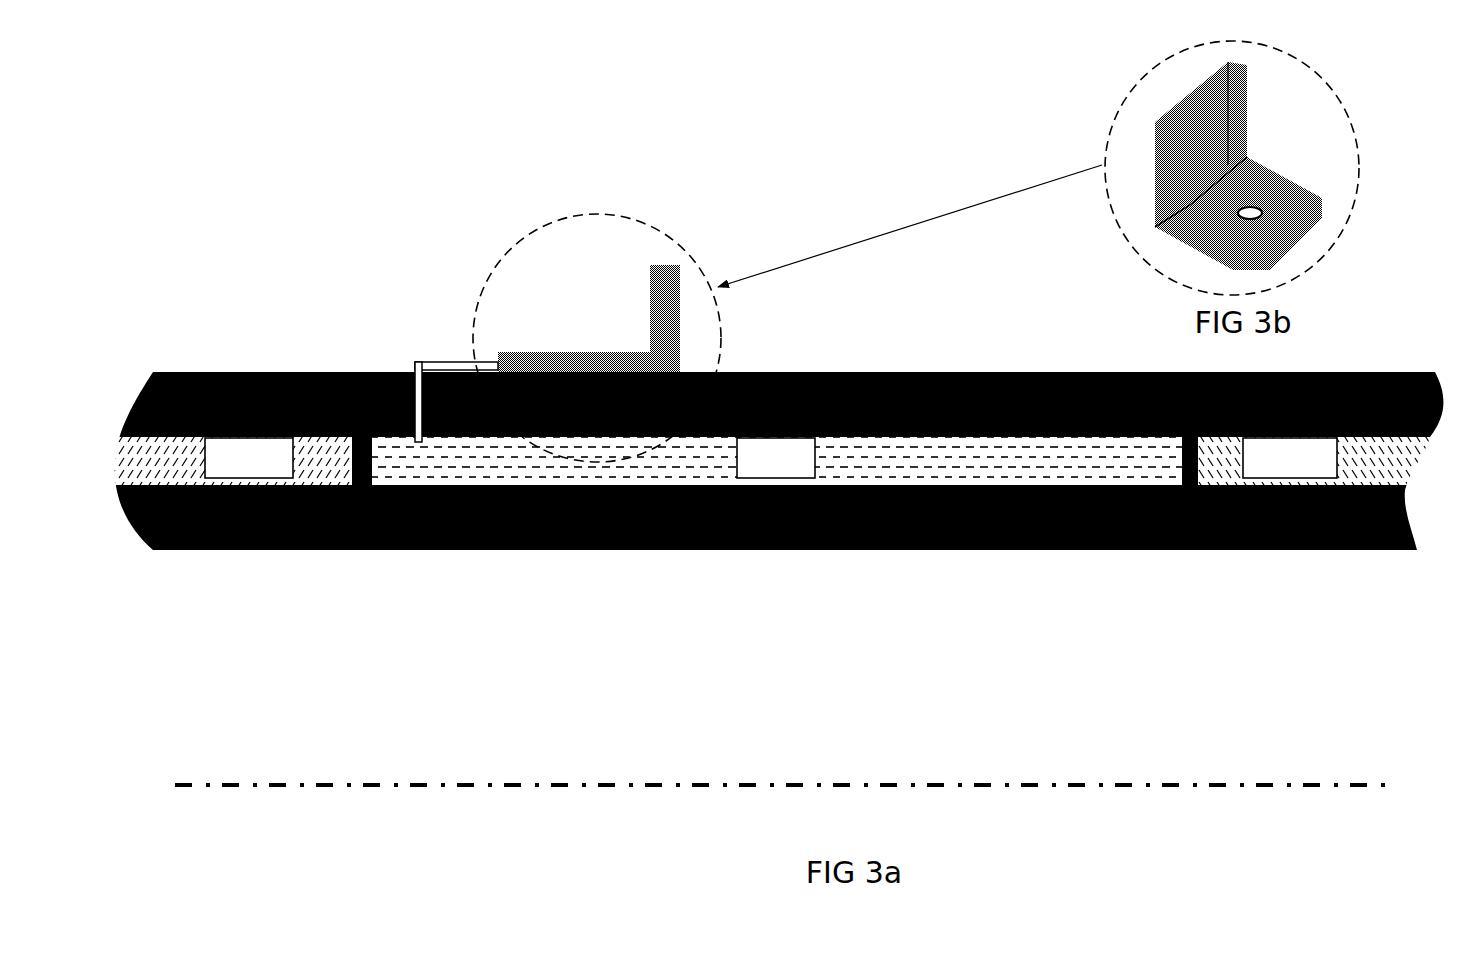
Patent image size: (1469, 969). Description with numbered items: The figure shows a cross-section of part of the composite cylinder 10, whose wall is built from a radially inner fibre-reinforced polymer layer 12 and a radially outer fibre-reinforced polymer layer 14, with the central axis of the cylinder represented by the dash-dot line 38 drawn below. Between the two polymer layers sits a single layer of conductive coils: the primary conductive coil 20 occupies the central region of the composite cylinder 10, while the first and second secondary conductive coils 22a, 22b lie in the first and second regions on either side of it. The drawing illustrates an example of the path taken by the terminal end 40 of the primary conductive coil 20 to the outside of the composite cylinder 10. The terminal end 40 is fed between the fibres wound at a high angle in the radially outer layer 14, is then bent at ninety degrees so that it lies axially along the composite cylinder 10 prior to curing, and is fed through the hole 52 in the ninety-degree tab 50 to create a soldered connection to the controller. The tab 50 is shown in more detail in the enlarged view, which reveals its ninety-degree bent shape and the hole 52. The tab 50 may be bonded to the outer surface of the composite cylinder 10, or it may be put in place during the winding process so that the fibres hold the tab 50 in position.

In FIG. 3A, the composite cylinder 10 is at (232, 137).
In FIG. 3A, the radially inner fibre-reinforced polymer layer 12 is at (438, 548).
In FIG. 3A, the radially outer fibre-reinforced polymer layer 14 is at (303, 370).
In FIG. 3A, the primary conductive coil 20 is at (785, 461).
In FIG. 3A, the first secondary conductive coil 22a is at (236, 461).
In FIG. 3A, the second secondary conductive coil 22b is at (1329, 461).
In FIG. 3A, the central axis 38 is at (1107, 778).
In FIG. 3A, the terminal end 40 is at (433, 360).
In FIG. 3A, the tab 50 is at (555, 352).
In FIG. 3B, the tab 50 is at (1250, 107).
In FIG. 3B, the hole 52 is at (1267, 205).